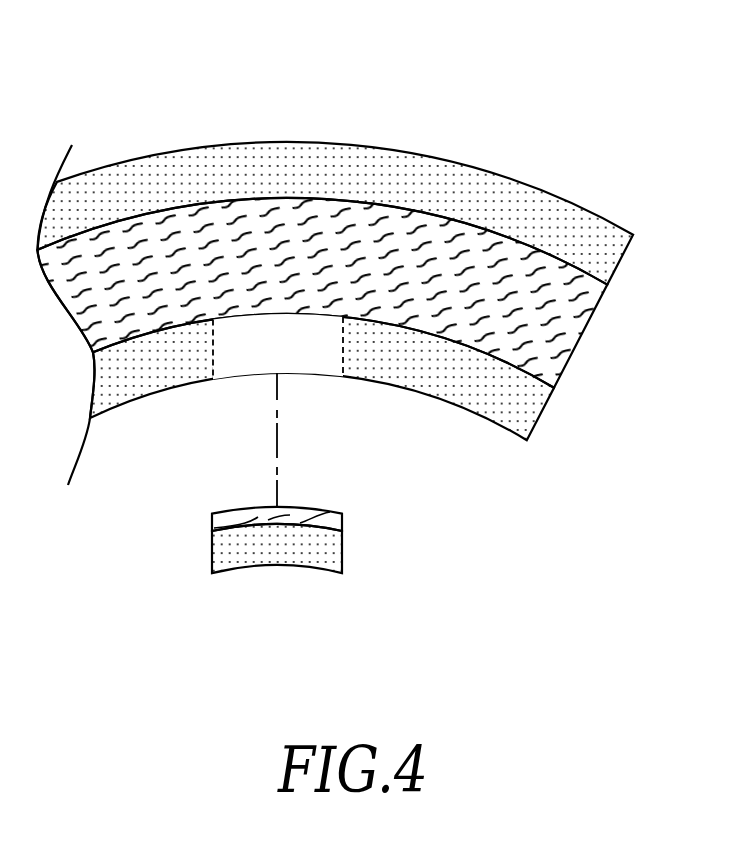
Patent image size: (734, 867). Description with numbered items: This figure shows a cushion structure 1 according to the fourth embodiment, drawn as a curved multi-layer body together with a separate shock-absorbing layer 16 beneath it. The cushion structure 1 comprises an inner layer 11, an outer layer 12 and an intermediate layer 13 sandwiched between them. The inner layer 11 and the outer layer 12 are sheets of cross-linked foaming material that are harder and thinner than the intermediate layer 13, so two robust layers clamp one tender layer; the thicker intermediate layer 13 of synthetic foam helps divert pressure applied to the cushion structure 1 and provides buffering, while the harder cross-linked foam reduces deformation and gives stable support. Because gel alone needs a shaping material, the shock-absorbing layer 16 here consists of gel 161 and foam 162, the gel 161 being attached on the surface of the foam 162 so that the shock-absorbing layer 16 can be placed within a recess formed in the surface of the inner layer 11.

The cushion structure 1 is at (616, 122).
The inner layer 11 is at (532, 408).
The outer layer 12 is at (618, 237).
The intermediate layer 13 is at (573, 338).
The shock-absorbing layer 16 is at (366, 558).
The gel 161 is at (338, 553).
The foam 162 is at (338, 515).